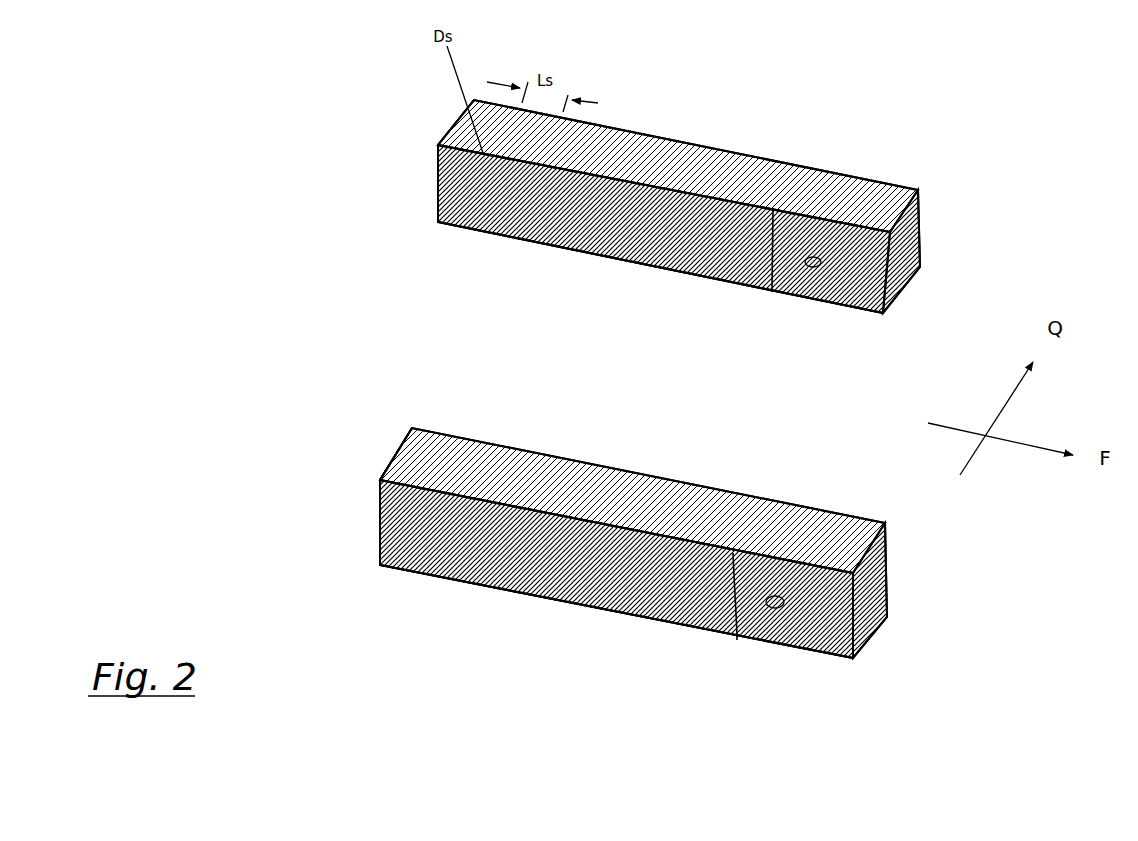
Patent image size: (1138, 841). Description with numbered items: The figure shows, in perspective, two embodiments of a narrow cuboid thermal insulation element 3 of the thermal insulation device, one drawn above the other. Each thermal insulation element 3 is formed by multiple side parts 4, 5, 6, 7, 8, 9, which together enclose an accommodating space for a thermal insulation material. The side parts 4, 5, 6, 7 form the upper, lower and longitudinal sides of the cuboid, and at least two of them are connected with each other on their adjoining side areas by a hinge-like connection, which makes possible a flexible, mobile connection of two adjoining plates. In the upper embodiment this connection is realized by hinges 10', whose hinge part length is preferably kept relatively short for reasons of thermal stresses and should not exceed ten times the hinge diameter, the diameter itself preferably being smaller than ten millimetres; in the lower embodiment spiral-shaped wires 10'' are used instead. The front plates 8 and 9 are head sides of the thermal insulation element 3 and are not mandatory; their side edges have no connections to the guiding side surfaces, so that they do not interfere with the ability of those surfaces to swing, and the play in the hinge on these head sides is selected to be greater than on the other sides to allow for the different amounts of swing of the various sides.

The thermal insulation element 3 is at (968, 150).
The side part 4 is at (650, 158).
The side part 5 is at (612, 272).
The side part 6 is at (657, 224).
The side part 7 is at (867, 168).
The front plate 8 is at (907, 254).
The front plate 9 is at (430, 162).
The hinge 10' is at (780, 283).
The spiral-shaped wire 10'' is at (739, 631).